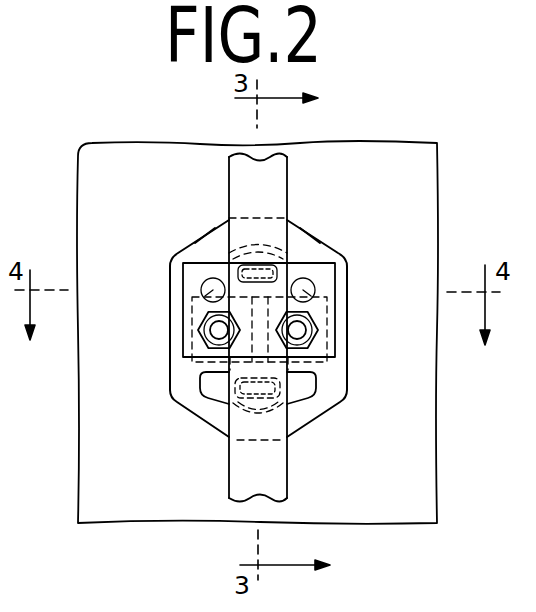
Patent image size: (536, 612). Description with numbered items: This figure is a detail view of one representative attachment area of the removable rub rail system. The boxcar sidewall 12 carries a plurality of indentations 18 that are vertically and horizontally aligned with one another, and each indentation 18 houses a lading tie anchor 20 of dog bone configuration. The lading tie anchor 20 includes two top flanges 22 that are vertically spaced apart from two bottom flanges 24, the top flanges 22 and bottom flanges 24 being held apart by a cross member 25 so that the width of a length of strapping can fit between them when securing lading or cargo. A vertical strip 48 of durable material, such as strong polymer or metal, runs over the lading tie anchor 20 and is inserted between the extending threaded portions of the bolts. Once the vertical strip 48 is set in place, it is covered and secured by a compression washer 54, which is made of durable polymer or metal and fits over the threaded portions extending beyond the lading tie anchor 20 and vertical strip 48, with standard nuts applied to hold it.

The sidewall 12 is at (417, 187).
The indentation 18 is at (221, 236).
The lading tie anchor 20 is at (315, 398).
The top flanges 22 is at (213, 266).
The bottom flanges 24 is at (300, 387).
The cross member 25 is at (258, 313).
The vertical strip 48 is at (277, 193).
The compression washer 54 is at (195, 338).